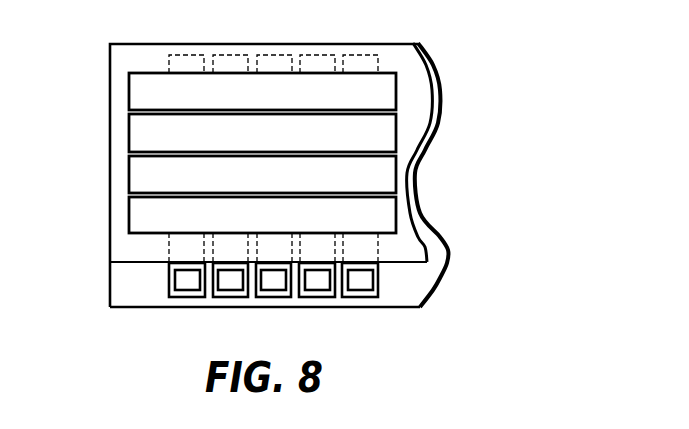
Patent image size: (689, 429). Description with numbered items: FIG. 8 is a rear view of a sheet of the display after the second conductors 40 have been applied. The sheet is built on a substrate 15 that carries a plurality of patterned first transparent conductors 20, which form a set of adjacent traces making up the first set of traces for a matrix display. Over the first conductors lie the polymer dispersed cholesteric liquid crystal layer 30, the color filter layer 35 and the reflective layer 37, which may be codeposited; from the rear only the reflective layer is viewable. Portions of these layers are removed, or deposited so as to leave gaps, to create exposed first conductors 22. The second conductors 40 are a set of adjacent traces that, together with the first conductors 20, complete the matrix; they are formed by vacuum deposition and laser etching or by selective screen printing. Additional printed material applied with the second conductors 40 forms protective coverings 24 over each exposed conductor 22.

The substrate 15 is at (339, 175).
The first transparent conductors 20 is at (273, 158).
The exposed first conductors 22 is at (228, 292).
The protective coverings 24 is at (320, 292).
The polymer dispersed cholesteric liquid crystal layer 30 is at (487, 175).
The color filter layer 35 is at (487, 175).
The reflective layer 37 is at (410, 68).
The second conductors 40 is at (396, 93).